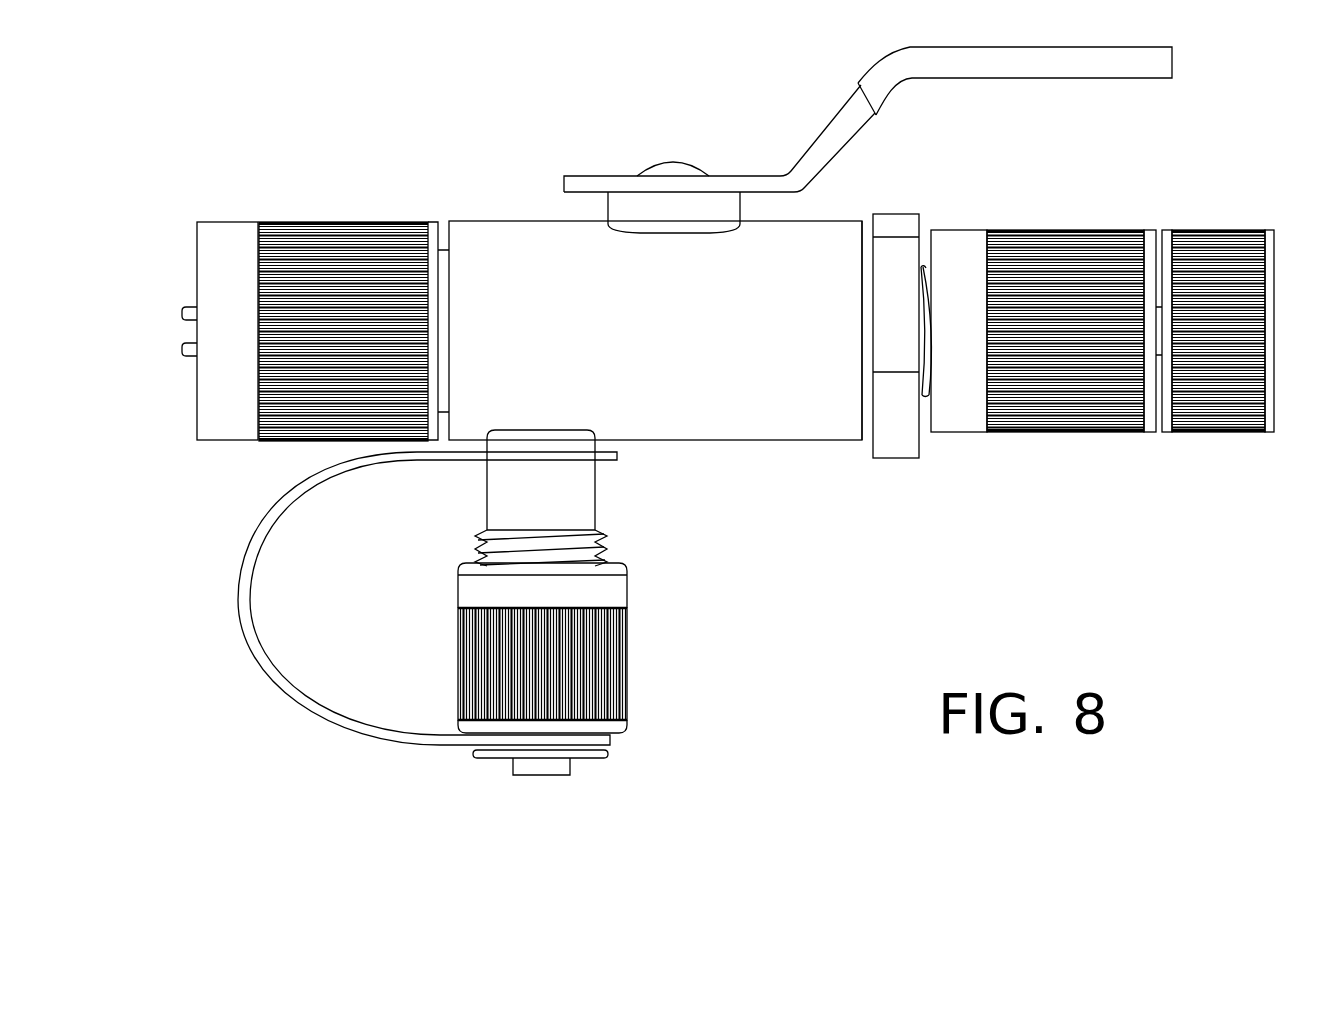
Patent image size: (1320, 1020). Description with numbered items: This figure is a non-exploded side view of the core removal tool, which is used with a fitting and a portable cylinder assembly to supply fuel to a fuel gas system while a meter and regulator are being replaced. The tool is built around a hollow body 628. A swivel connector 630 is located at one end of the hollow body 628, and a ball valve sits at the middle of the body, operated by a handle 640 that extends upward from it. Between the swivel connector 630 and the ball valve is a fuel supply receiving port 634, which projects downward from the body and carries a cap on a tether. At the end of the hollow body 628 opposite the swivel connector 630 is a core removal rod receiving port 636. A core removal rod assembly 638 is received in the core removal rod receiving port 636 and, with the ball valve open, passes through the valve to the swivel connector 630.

The hollow body 628 is at (540, 232).
The swivel connector 630 is at (295, 222).
The fuel supply receiving port 634 is at (590, 512).
The core removal rod receiving port 636 is at (925, 398).
The core removal rod assembly 638 is at (1093, 433).
The handle 640 is at (1165, 60).